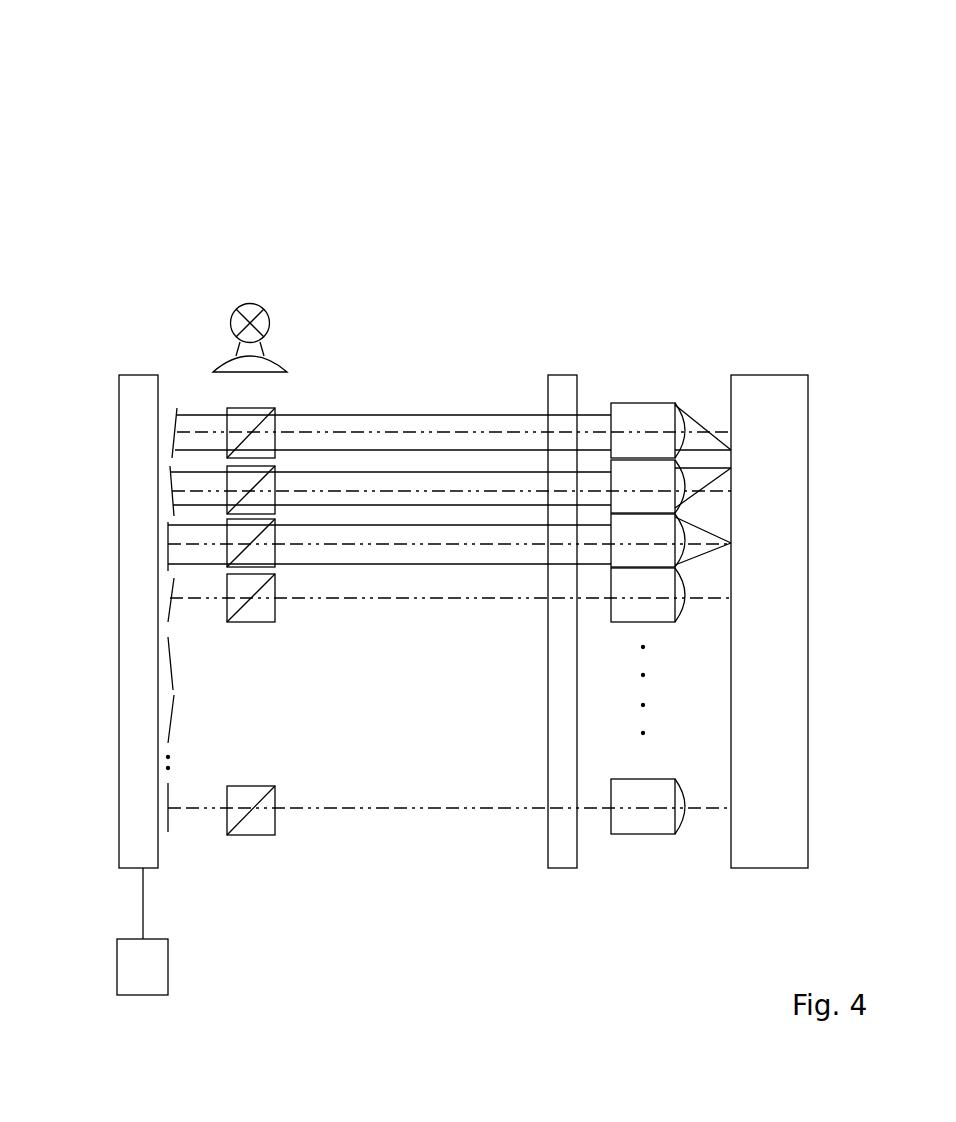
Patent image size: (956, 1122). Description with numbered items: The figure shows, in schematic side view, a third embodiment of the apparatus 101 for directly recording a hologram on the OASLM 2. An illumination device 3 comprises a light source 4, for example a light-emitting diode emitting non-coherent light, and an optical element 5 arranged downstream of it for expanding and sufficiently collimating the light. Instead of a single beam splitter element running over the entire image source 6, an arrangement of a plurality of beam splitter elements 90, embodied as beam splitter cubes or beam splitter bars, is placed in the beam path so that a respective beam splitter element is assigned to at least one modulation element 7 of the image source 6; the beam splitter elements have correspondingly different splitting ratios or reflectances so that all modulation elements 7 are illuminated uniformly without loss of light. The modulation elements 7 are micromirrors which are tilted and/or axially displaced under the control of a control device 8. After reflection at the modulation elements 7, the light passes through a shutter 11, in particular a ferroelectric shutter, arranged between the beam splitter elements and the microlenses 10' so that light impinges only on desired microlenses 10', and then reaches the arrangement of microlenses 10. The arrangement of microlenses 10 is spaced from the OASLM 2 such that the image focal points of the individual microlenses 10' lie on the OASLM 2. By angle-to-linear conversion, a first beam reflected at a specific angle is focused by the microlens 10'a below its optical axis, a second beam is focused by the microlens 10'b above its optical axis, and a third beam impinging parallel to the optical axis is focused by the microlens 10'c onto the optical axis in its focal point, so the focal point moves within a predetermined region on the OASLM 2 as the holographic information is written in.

The apparatus 101 is at (463, 435).
The OASLM 2 is at (775, 398).
The illumination device 3 is at (164, 258).
The light source 4 is at (249, 304).
The optical element 5 is at (223, 367).
The image source 6 is at (138, 788).
The modulation elements 7 is at (177, 427).
The control device 8 is at (142, 931).
The arrangement of microlenses 10 is at (648, 693).
The microlens 10' is at (679, 874).
The microlens 10'a is at (671, 430).
The microlens 10'b is at (671, 486).
The microlens 10'c is at (671, 540).
The shutter 11 is at (558, 385).
The arrangement of a plurality of beam splitter elements 90 is at (252, 887).